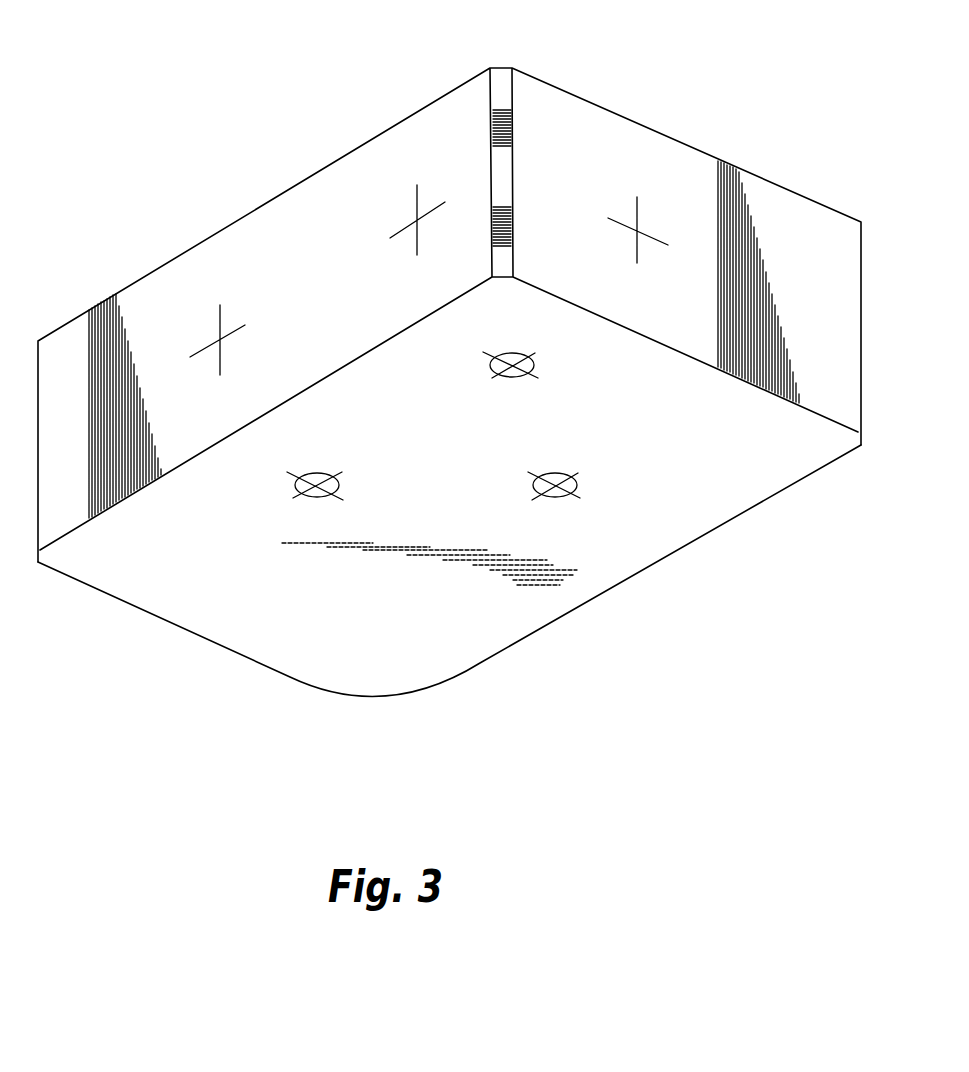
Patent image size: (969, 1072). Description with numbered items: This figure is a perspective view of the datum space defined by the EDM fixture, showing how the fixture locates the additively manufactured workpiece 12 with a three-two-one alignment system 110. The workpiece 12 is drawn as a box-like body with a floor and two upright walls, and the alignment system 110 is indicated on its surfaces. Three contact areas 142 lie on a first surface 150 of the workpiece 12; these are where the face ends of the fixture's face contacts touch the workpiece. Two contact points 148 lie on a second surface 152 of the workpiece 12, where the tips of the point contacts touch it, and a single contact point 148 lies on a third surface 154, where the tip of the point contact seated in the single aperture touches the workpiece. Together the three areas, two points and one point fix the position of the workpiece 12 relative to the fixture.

The additively manufactured workpiece 12 is at (82, 303).
The 3-2-1 alignment system 110 is at (408, 252).
The contact areas 142 is at (512, 350).
The contact points 148 is at (397, 230).
The first surface 150 is at (328, 650).
The second surface 152 is at (270, 243).
The third surface 154 is at (548, 113).